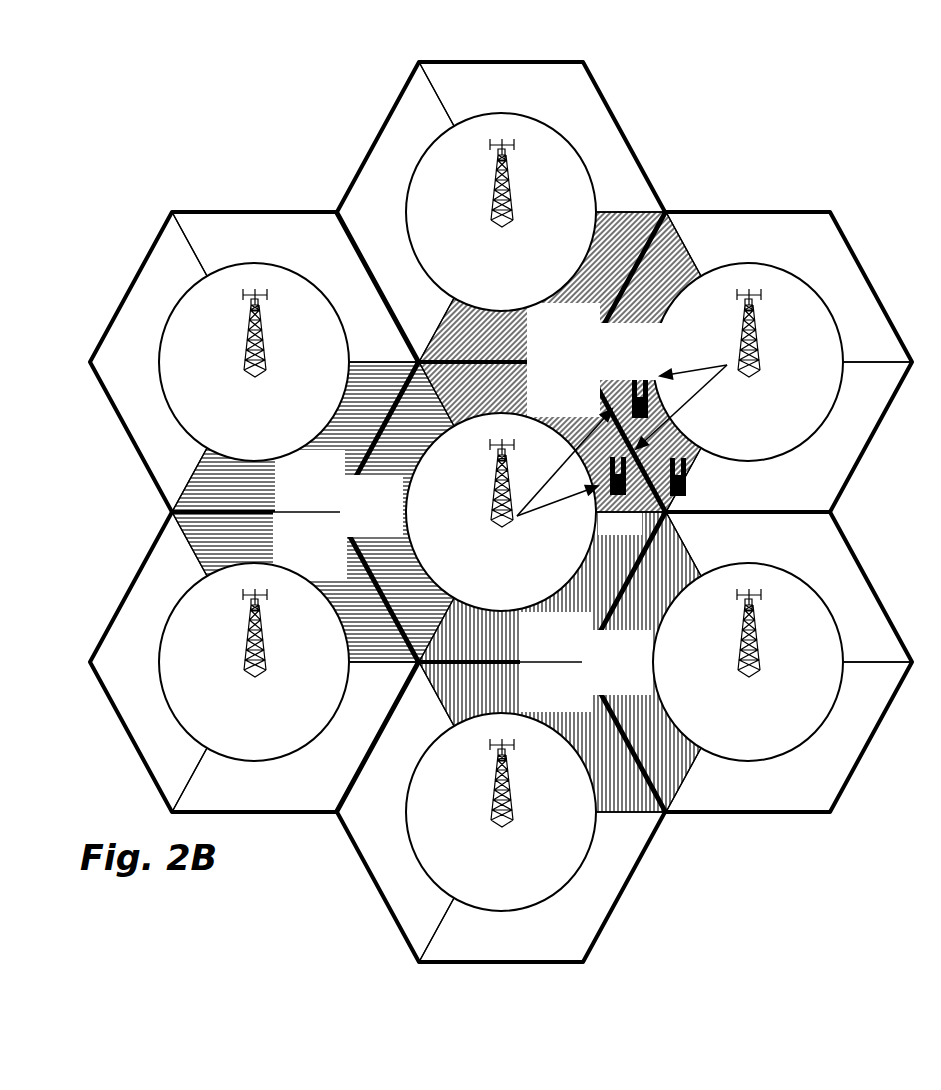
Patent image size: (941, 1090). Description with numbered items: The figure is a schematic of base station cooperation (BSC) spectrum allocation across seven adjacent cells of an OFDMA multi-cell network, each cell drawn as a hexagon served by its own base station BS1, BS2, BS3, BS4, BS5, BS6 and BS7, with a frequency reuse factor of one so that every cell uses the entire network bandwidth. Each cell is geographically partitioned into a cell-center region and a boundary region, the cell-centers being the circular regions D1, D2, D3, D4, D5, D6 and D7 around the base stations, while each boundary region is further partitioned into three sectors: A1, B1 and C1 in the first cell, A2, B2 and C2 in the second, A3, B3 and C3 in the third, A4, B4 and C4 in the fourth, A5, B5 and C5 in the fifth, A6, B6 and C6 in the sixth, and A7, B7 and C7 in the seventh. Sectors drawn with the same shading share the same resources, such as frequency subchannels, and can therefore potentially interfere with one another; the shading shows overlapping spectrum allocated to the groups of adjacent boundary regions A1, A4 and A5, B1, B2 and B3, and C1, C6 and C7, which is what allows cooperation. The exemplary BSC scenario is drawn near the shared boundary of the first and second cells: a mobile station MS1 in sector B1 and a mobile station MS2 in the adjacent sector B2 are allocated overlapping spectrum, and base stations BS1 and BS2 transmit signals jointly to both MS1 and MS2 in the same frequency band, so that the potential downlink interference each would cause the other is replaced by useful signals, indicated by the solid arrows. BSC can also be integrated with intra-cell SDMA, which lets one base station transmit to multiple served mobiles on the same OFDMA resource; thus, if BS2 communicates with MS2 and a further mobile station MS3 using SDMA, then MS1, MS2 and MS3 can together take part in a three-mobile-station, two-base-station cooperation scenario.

The base station BS1 is at (499, 501).
The base station BS2 is at (746, 351).
The base station BS3 is at (499, 201).
The base station BS4 is at (252, 351).
The base station BS5 is at (252, 651).
The base station BS6 is at (499, 800).
The base station BS7 is at (746, 651).
The mobile station MS1 is at (621, 497).
The mobile station MS2 is at (673, 376).
The mobile station MS3 is at (709, 480).
The boundary sector A1 is at (403, 512).
The boundary sector B1 is at (542, 437).
The boundary sector C1 is at (542, 587).
The cell-center region D1 is at (501, 512).
The boundary sector A2 is at (789, 437).
The boundary sector B2 is at (653, 362).
The boundary sector C2 is at (789, 287).
The cell-center region D2 is at (748, 362).
The boundary sector A3 is at (542, 137).
The boundary sector B3 is at (542, 287).
The boundary sector C3 is at (406, 212).
The cell-center region D3 is at (501, 212).
The boundary sector A4 is at (295, 437).
The boundary sector B4 is at (160, 362).
The boundary sector C4 is at (295, 287).
The cell-center region D4 is at (254, 362).
The boundary sector A5 is at (295, 587).
The boundary sector B5 is at (295, 737).
The boundary sector C5 is at (160, 662).
The cell-center region D5 is at (254, 662).
The boundary sector A6 is at (542, 887).
The boundary sector B6 is at (406, 812).
The boundary sector C6 is at (542, 737).
The cell-center region D6 is at (501, 812).
The boundary sector A7 is at (789, 587).
The boundary sector B7 is at (789, 737).
The boundary sector C7 is at (649, 662).
The cell-center region D7 is at (748, 662).